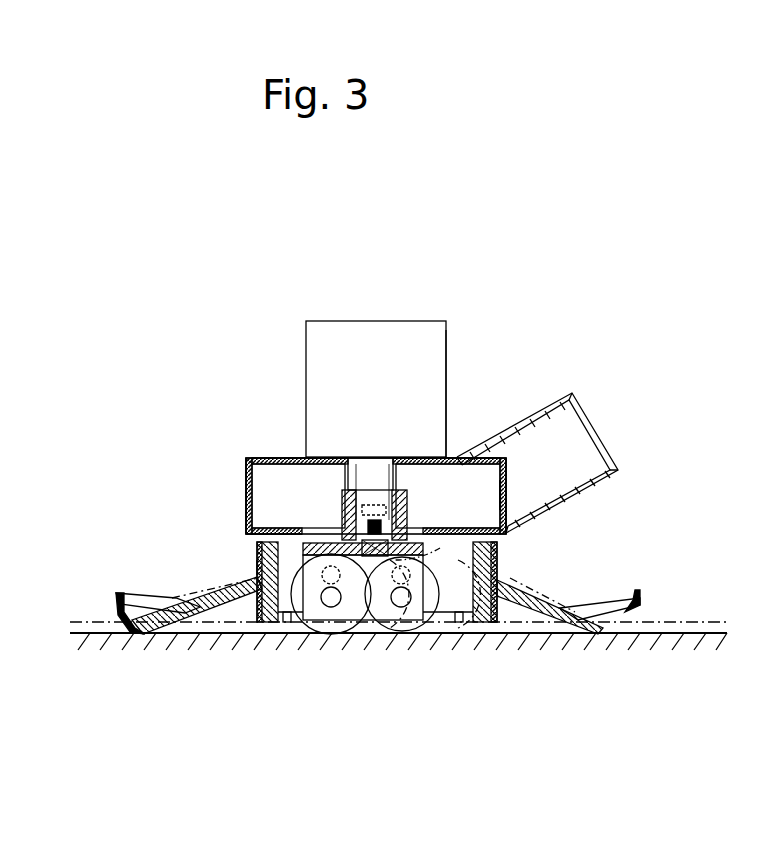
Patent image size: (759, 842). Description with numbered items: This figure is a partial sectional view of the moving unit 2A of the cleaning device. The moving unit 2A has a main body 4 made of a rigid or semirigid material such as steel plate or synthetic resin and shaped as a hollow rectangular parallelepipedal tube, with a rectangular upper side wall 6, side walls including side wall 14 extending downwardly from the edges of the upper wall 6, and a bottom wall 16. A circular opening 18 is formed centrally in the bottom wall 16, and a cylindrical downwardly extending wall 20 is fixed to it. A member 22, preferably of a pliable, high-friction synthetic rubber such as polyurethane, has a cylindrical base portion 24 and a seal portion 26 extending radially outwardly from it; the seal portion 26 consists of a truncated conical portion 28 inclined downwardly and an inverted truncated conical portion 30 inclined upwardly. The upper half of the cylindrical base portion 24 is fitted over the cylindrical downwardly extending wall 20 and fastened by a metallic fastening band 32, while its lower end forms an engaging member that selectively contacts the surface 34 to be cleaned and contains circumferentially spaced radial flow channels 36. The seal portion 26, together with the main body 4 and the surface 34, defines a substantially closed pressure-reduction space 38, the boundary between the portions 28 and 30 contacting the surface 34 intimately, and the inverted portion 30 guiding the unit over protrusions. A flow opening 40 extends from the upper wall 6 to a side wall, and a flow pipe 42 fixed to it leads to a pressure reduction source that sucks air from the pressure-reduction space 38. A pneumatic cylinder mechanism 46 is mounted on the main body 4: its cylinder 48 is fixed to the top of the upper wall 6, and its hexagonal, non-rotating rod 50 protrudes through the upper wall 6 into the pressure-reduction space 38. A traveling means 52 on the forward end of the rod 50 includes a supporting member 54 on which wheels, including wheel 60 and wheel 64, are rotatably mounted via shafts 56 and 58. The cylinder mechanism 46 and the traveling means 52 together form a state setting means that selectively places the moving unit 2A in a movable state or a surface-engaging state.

The moving unit 2A is at (221, 366).
The main body 4 is at (258, 456).
The upper side wall 6 is at (317, 458).
The side wall 14 is at (245, 480).
The bottom wall 16 is at (255, 548).
The circular opening 18 is at (500, 553).
The cylindrical downwardly extending wall 20 is at (450, 635).
The member 22 is at (510, 578).
The cylindrical base portion 24 is at (222, 650).
The seal portion 26 is at (120, 588).
The truncated conical portion 28 is at (185, 655).
The inverted truncated conical portion 30 is at (122, 650).
The metallic fastening band 32 is at (500, 570).
The surface to be cleaned 34 is at (662, 633).
The flow channels 36 is at (290, 650).
The pressure-reduction space 38 is at (240, 655).
The flow opening 40 is at (505, 495).
The flow pipe 42 is at (523, 419).
The pneumatic cylinder mechanism 46 is at (393, 320).
The cylinder 48 is at (448, 356).
The rod 50 is at (395, 478).
The traveling means 52 is at (350, 655).
The supporting member 54 is at (352, 470).
The shaft 56 is at (305, 650).
The shaft 58 is at (378, 652).
The wheel 60 is at (290, 545).
The wheel 64 is at (440, 562).